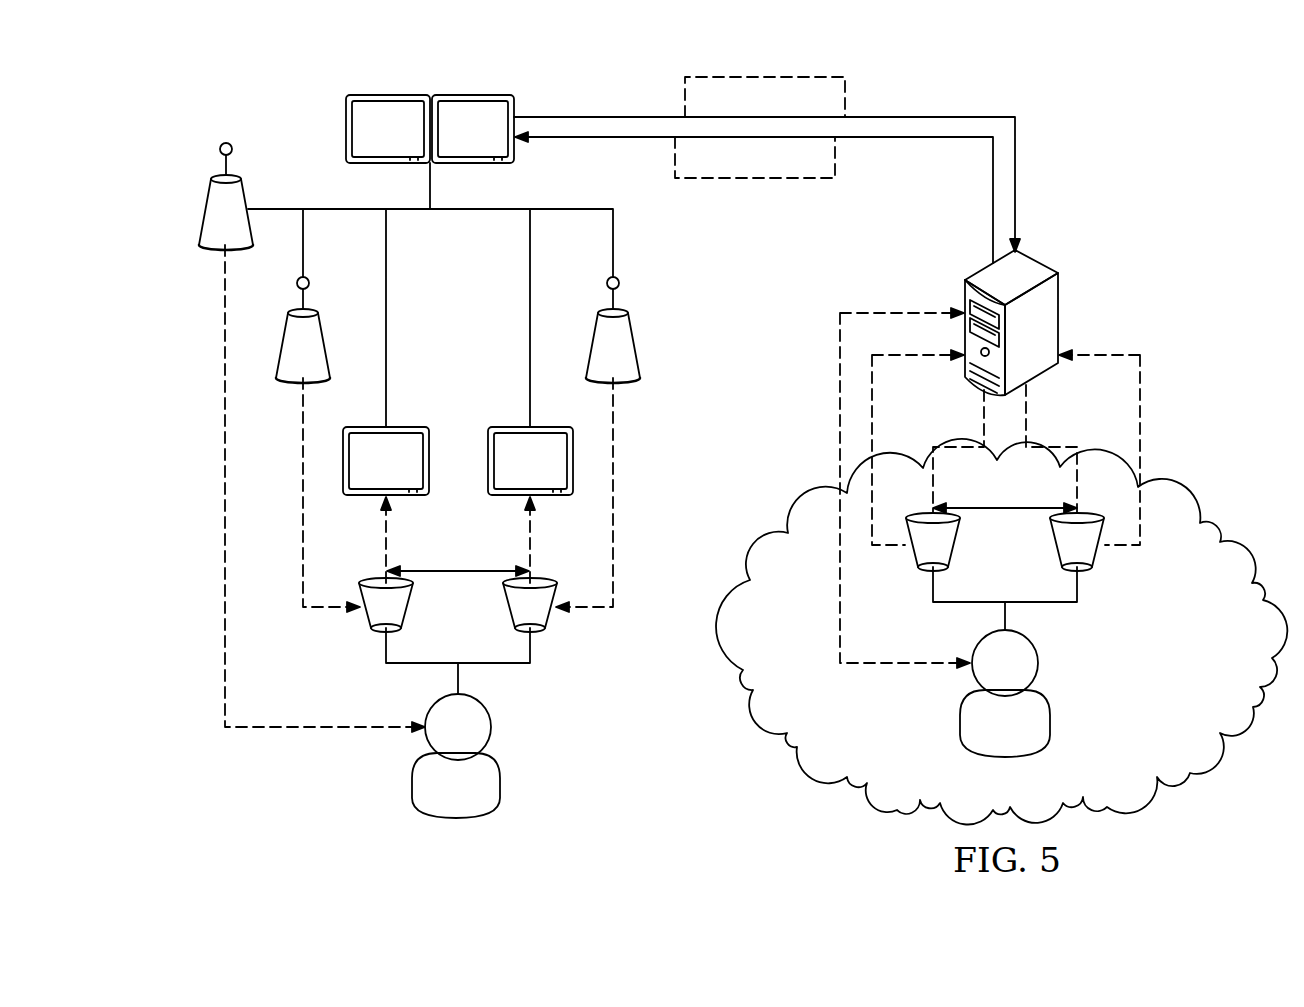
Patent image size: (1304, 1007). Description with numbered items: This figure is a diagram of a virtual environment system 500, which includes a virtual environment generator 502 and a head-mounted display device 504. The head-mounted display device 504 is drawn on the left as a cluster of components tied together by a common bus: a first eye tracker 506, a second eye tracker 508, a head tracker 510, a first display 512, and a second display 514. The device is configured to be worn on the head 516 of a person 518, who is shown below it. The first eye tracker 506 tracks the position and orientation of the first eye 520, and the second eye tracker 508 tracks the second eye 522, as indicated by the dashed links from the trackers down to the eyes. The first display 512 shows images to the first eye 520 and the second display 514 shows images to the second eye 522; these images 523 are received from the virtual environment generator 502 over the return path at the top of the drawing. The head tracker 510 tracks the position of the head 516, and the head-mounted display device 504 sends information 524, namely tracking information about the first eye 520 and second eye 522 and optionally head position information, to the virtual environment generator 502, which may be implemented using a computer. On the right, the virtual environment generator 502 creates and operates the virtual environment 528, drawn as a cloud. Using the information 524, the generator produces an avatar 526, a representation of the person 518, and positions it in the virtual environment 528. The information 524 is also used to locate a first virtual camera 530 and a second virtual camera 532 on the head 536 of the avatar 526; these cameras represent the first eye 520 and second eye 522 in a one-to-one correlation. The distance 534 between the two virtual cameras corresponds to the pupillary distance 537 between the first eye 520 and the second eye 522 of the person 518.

The virtual environment system 500 is at (1060, 116).
The virtual environment generator 502 is at (1060, 318).
The head-mounted display device 504 is at (346, 132).
The first eye tracker 506 is at (302, 380).
The second eye tracker 508 is at (620, 380).
The head tracker 510 is at (210, 204).
The first display 512 is at (368, 497).
The second display 514 is at (547, 497).
The head 516 is at (491, 730).
The person 518 is at (493, 788).
The first eye 520 is at (364, 616).
The second eye 522 is at (556, 616).
The images 523 is at (753, 178).
The information 524 is at (765, 77).
The avatar 526 is at (1040, 727).
The virtual environment 528 is at (1172, 696).
The first virtual camera 530 is at (910, 556).
The second virtual camera 532 is at (1100, 556).
The distance 534 is at (1005, 508).
The head of avatar 536 is at (1036, 668).
The pupillary distance 537 is at (457, 573).